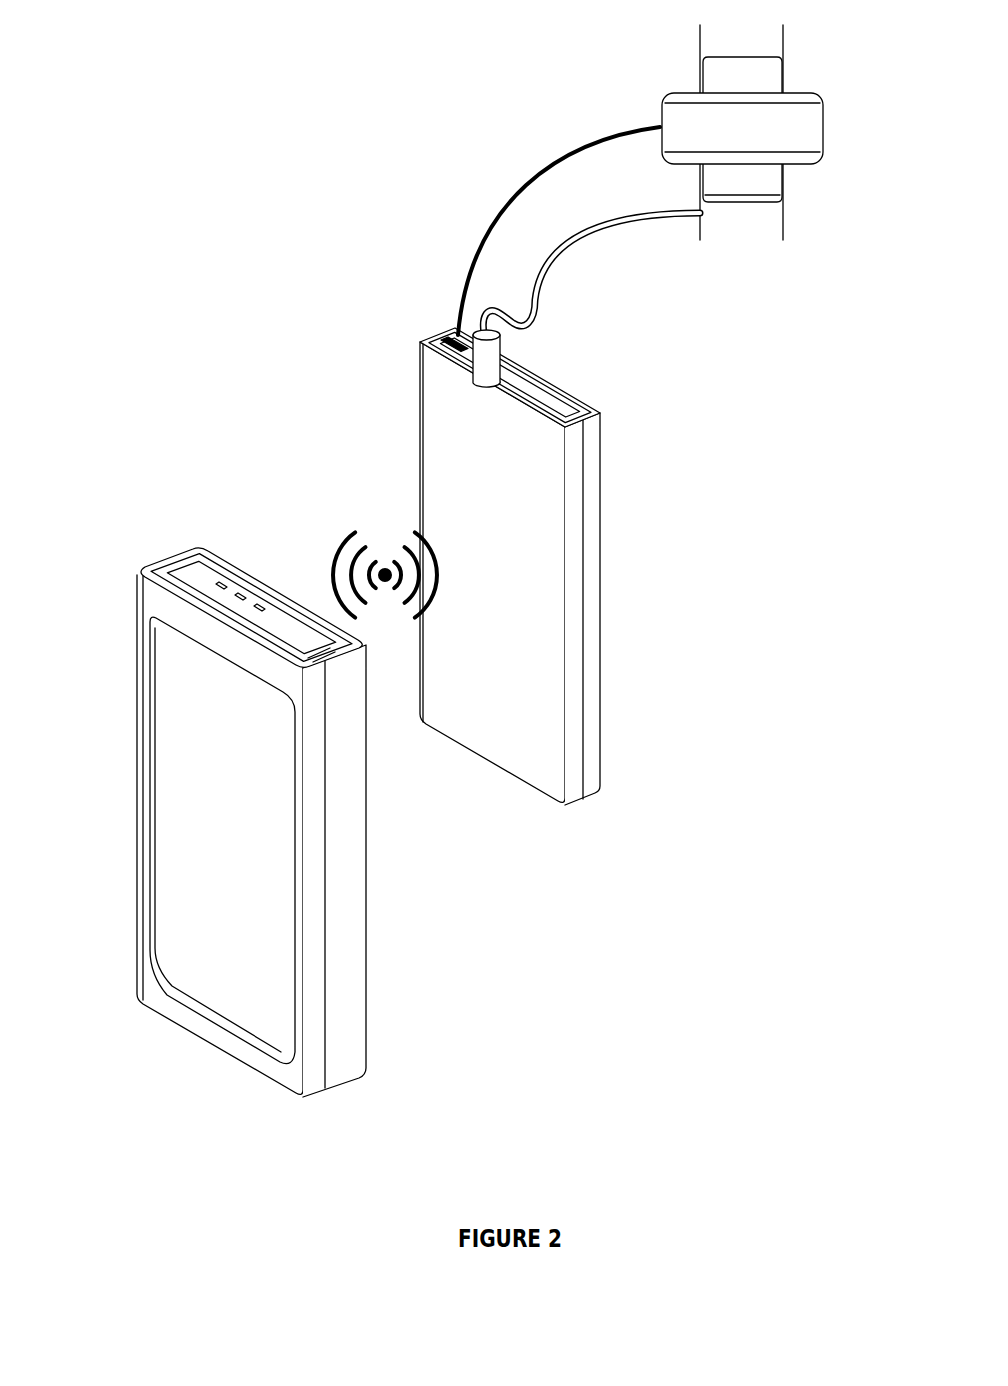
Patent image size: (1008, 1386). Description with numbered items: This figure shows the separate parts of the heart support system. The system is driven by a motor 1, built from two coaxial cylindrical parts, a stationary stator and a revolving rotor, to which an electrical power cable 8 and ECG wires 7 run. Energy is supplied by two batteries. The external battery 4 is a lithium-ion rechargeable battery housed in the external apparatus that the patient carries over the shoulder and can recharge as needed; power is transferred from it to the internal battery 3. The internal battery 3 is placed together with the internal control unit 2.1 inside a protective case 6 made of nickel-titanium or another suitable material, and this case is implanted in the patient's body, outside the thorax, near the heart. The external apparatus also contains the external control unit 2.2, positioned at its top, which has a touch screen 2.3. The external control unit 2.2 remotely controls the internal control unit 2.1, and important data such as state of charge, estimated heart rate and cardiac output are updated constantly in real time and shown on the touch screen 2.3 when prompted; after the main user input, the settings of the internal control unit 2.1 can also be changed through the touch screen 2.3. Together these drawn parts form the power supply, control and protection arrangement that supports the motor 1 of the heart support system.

The motor 1 is at (812, 128).
The internal battery 3 is at (484, 566).
The external battery 4 is at (210, 790).
The protective case 6 is at (438, 415).
The ECG wires 7 is at (500, 350).
The electrical power cable 8 is at (525, 183).
The internal control unit 2.1 is at (420, 343).
The external control unit 2.2 is at (209, 568).
The touch screen 2.3 is at (193, 778).